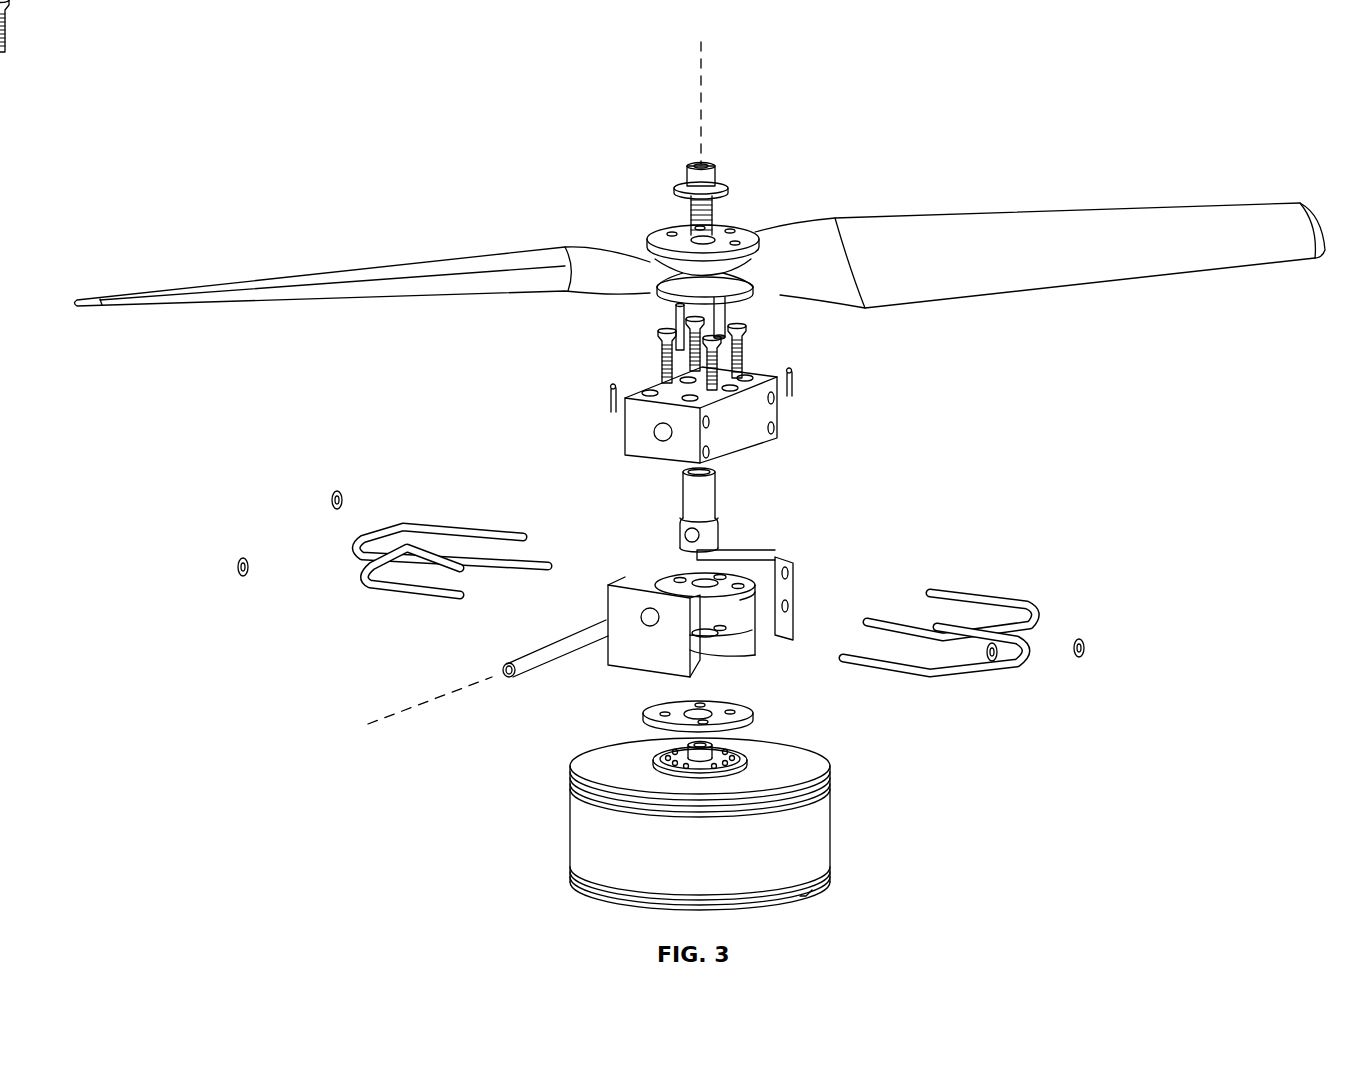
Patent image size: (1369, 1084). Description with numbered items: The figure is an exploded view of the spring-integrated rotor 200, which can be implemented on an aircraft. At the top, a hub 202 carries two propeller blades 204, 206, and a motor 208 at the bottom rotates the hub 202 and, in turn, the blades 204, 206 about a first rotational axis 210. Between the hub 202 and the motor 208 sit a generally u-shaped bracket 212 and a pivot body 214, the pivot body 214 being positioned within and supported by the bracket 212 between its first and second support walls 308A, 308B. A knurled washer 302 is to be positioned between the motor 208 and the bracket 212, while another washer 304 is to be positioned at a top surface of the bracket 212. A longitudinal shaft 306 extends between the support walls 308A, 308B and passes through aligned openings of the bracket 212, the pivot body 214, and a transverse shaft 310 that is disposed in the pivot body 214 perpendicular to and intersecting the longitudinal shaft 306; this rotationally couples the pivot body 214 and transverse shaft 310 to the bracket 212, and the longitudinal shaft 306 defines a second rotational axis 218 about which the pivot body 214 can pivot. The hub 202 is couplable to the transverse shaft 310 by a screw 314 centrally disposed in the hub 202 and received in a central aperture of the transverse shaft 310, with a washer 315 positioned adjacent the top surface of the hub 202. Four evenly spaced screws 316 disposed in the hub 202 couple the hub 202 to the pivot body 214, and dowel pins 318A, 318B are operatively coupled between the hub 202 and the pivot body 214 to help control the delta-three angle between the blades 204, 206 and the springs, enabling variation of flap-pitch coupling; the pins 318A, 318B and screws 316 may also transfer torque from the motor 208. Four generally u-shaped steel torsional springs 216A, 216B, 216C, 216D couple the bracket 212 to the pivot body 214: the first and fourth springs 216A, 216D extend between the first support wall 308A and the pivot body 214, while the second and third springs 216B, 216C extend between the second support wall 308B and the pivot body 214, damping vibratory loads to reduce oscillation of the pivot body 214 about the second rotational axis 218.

The spring-integrated rotor 200 is at (1058, 130).
The hub 202 is at (735, 225).
The propeller blade 204 is at (912, 212).
The propeller blade 206 is at (220, 275).
The motor 208 is at (830, 850).
The first rotational axis 210 is at (700, 60).
The bracket 212 is at (798, 598).
The pivot body 214 is at (622, 430).
The first torsional spring 216A is at (940, 678).
The second torsional spring 216B is at (1000, 598).
The third torsional spring 216C is at (390, 588).
The fourth torsional spring 216D is at (428, 517).
The second rotational axis 218 is at (414, 706).
The washer 302 is at (640, 720).
The washer 304 is at (660, 575).
The longitudinal shaft 306 is at (497, 667).
The first support wall 308A is at (655, 588).
The second support wall 308B is at (780, 560).
The transverse shaft 310 is at (722, 522).
The screw 314 is at (690, 208).
The washer 315 is at (675, 190).
The screws 316 is at (650, 358).
The pin 318A is at (672, 328).
The pin 318B is at (730, 305).